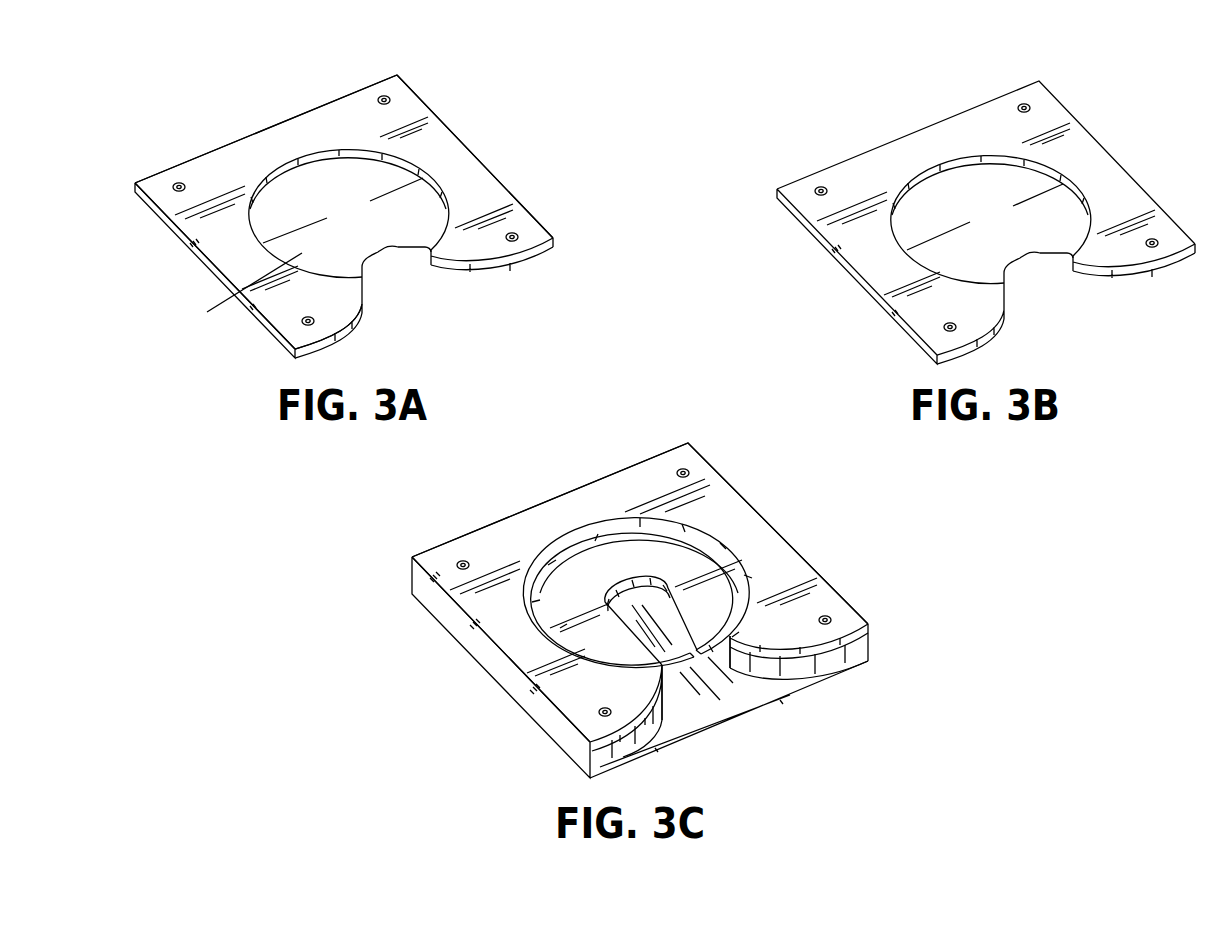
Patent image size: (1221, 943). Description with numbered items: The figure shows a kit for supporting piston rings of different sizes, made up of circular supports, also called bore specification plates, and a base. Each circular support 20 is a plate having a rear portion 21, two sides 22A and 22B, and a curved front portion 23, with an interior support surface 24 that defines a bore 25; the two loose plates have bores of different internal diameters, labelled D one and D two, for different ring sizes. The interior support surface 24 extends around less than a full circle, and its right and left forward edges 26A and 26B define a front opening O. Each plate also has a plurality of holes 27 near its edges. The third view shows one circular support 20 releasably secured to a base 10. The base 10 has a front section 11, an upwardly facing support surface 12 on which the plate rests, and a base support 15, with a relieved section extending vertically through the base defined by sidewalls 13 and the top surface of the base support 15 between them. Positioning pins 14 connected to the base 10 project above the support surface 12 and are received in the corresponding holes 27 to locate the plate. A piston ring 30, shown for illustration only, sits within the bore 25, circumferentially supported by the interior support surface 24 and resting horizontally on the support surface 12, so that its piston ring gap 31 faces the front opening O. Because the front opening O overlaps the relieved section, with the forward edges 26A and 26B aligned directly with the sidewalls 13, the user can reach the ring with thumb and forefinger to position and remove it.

In FIG. 3C, the base 10 is at (513, 687).
In FIG. 3C, the front section 11 is at (837, 662).
In FIG. 3C, the support surface 12 is at (630, 557).
In FIG. 3C, the sidewalls 13 is at (737, 663).
In FIG. 3C, the positioning pins 14 is at (458, 562).
In FIG. 3C, the base support 15 is at (738, 712).
In FIG. 3A, the circular support 20 is at (163, 223).
In FIG. 3B, the circular support 20 is at (986, 222).
In FIG. 3C, the circular support 20 is at (727, 512).
In FIG. 3A, the rear portion 21 is at (280, 122).
In FIG. 3A, the side 22A is at (207, 266).
In FIG. 3A, the side 22B is at (497, 179).
In FIG. 3A, the curved front portion 23 is at (327, 337).
In FIG. 3A, the interior support surface 24 is at (395, 156).
In FIG. 3B, the interior support surface 24 is at (1001, 168).
In FIG. 3A, the bore 25 is at (239, 293).
In FIG. 3A, the right forward edge 26A is at (367, 281).
In FIG. 3A, the left forward edge 26B is at (436, 267).
In FIG. 3A, the holes 27 is at (179, 183).
In FIG. 3C, the piston ring 30 is at (742, 578).
In FIG. 3C, the piston ring gap 31 is at (707, 672).